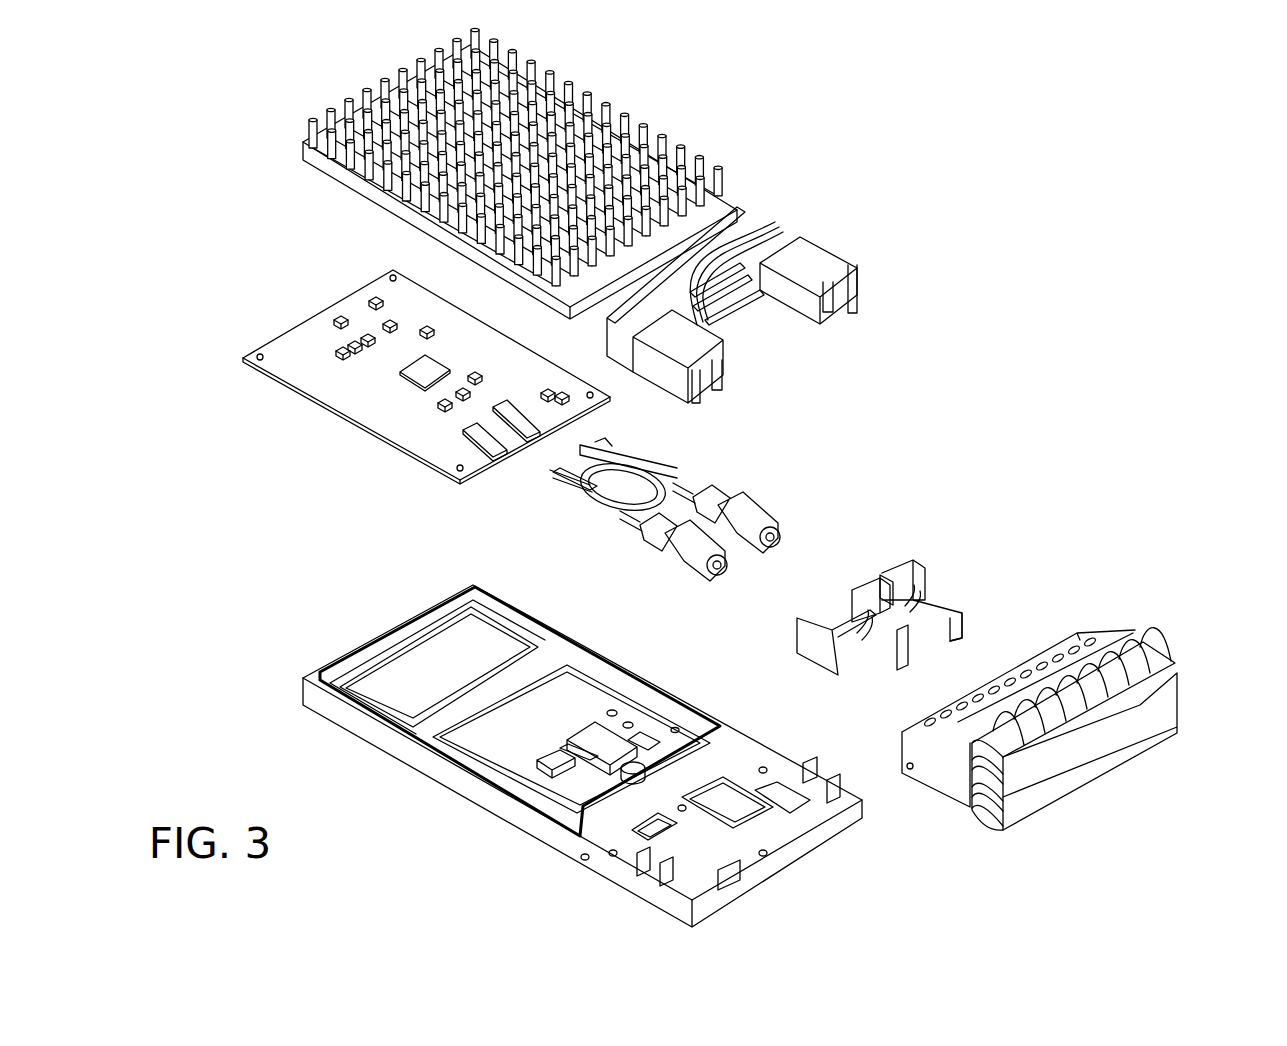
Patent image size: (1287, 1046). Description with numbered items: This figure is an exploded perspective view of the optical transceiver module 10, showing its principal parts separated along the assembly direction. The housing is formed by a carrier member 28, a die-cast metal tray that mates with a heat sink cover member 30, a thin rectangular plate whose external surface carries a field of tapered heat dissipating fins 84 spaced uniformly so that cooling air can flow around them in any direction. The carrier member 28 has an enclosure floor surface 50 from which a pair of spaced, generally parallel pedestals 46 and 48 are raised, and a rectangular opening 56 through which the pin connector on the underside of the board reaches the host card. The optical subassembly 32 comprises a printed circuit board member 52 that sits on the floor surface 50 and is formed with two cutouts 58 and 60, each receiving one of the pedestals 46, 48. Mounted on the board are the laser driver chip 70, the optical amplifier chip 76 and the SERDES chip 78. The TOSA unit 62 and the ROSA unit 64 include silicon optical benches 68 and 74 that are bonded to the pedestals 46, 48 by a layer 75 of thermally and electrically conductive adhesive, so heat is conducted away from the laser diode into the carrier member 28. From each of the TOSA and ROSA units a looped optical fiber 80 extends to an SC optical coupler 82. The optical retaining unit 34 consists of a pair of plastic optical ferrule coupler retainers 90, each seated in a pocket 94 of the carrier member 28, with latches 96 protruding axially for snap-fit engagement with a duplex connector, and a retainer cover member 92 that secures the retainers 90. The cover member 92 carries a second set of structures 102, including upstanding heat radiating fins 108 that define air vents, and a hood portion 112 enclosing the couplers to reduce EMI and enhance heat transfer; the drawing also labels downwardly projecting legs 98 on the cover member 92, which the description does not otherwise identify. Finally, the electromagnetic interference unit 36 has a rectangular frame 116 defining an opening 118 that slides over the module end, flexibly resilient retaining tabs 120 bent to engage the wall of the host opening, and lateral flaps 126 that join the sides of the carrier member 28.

The optical transceiver module 10 is at (872, 128).
The carrier member 28 is at (582, 756).
The heat sink cover member 30 is at (482, 173).
The optical subassembly 32 is at (647, 567).
The optical retaining unit 34 is at (873, 290).
The electromagnetic interference assembly 36 is at (1071, 702).
The pedestal 46 is at (592, 738).
The pedestal 48 is at (545, 760).
The enclosure floor surface 50 is at (527, 719).
The printed circuit board member 52 is at (410, 377).
The rectangular opening 56 is at (430, 660).
The cutout 58 is at (497, 406).
The cutout 60 is at (468, 432).
The electro-optical transmitter subassembly (TOSA) unit 62 is at (595, 437).
The electro-optical receiver subassembly (ROSA) unit 64 is at (541, 489).
The silicon optical bench 68 is at (631, 486).
The laser driver chip 70 is at (472, 374).
The silicon optical bench 74 is at (573, 490).
The layer of thermally and electrically conductive adhesive material 75 is at (648, 730).
The optical amplifier chip 76 is at (440, 406).
The SERDES chip 78 is at (412, 365).
The looped optical fiber 80 is at (655, 473).
The SC optical coupler 82 is at (728, 508).
The heat dissipating fins 84 is at (567, 82).
The optical ferrule coupler retainer 90 is at (848, 605).
The retainer cover member 92 is at (862, 258).
The pocket 94 is at (735, 810).
The latch 96 is at (920, 672).
The legs 98 is at (826, 352).
The second set of structures 102 is at (778, 278).
The heat radiating fins 108 is at (752, 258).
The hood portion 112 is at (685, 290).
The frame 116 is at (1157, 690).
The opening 118 is at (1078, 740).
The retaining tabs 120 is at (1153, 652).
The lateral flaps 126 is at (930, 775).